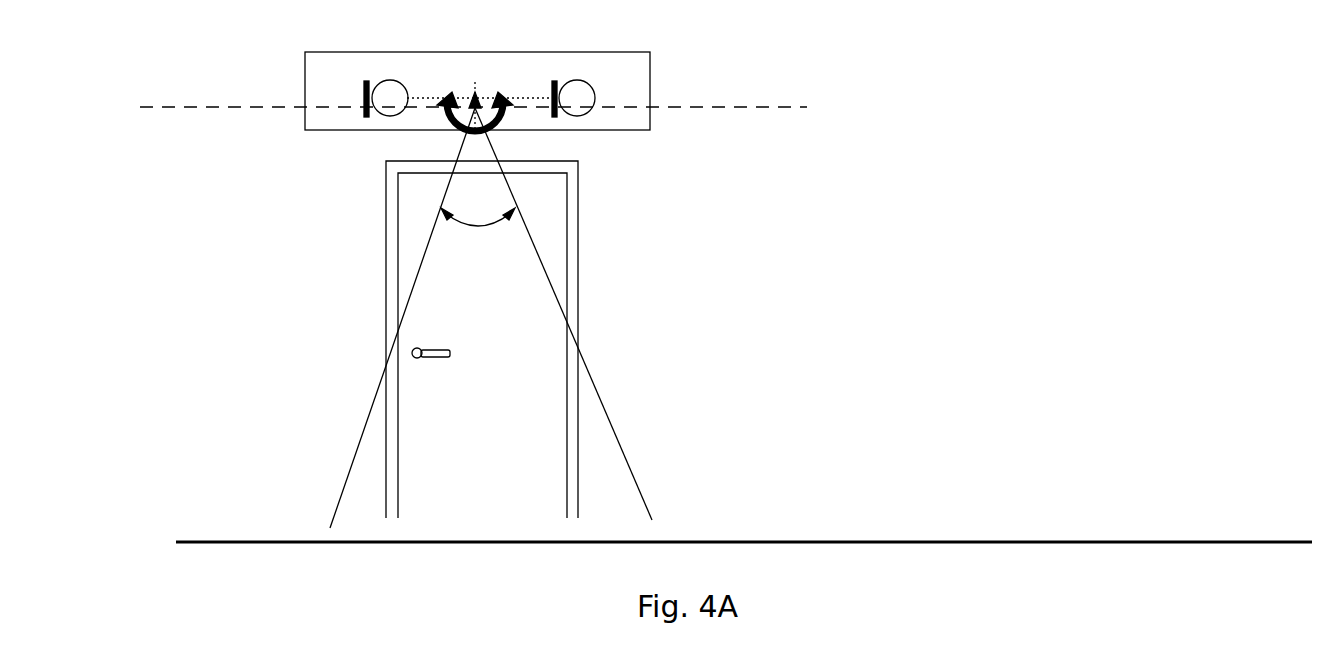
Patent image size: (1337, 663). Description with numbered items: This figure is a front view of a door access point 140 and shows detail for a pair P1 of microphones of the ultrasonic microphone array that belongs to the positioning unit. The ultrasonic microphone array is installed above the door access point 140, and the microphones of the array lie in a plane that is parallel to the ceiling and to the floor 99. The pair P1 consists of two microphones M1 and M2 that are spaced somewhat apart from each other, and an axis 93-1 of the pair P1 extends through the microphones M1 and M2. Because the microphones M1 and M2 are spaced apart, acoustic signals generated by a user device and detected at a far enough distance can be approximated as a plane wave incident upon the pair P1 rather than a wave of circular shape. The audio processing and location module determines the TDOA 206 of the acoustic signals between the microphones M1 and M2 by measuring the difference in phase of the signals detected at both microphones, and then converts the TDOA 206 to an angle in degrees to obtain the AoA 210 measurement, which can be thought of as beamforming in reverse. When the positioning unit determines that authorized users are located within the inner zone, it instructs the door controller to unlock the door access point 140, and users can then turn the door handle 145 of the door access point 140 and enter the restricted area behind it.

The floor 99 is at (744, 556).
The pair of microphones P1 is at (305, 92).
The axis 93-1 is at (772, 108).
The microphone M1 is at (386, 86).
The microphone M2 is at (573, 86).
The TDOA 206 is at (415, 98).
The AoA 210 is at (497, 228).
The door access point 140 is at (482, 339).
The door handle 145 is at (420, 352).